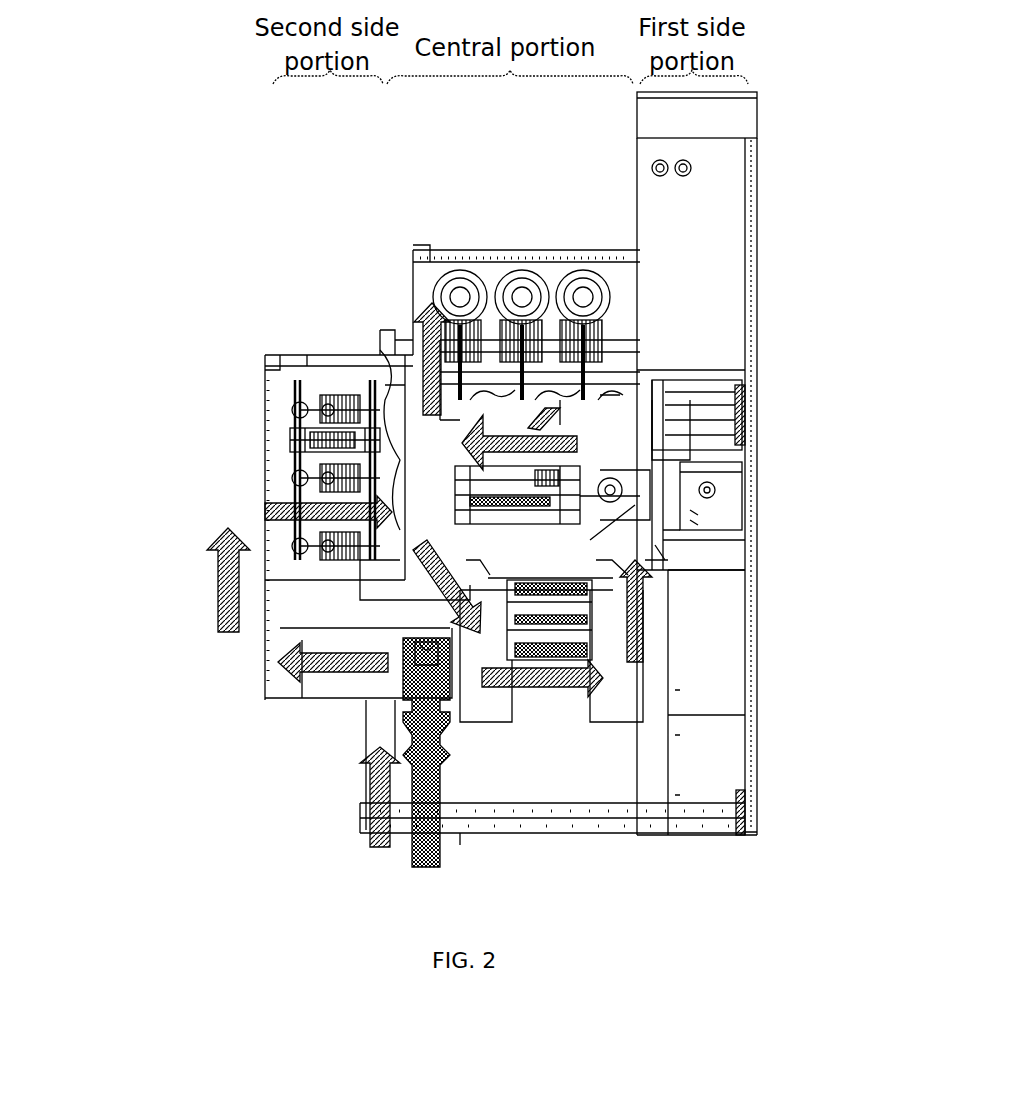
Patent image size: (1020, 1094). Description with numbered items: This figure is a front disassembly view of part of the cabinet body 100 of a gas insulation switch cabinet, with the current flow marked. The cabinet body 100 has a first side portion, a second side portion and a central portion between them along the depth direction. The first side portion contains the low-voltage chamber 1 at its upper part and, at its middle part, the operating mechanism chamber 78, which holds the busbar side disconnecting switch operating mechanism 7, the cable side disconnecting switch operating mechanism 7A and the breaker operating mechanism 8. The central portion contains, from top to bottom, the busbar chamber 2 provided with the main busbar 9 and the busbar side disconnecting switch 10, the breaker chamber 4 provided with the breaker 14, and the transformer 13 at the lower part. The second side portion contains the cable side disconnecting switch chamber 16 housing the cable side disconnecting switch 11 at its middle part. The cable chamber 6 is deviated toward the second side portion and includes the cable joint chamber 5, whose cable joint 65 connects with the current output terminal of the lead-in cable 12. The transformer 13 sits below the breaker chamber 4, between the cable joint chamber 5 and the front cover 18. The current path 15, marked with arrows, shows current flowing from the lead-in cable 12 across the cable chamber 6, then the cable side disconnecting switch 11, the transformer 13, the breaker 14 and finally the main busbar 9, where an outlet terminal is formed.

The cabinet body 100 is at (211, 174).
The low-voltage chamber 1 is at (695, 258).
The busbar chamber 2 is at (553, 276).
The main busbar 9 is at (505, 282).
The busbar side disconnecting switch 10 is at (432, 305).
The breaker chamber 4 is at (602, 417).
The busbar side disconnecting switch operating mechanism 7 is at (693, 380).
The cable side disconnecting switch operating mechanism 7A is at (742, 420).
The breaker operating mechanism 8 is at (705, 533).
The operating mechanism chamber 78 is at (715, 557).
The breaker 14 is at (560, 492).
The front cover 18 is at (748, 655).
The transformer 13 is at (588, 660).
The lead-in cable 12 is at (437, 773).
The cable chamber 6 is at (475, 755).
The cable side disconnecting switch chamber 16 is at (285, 385).
The cable side disconnecting switch 11 is at (315, 445).
The cable joint chamber 5 is at (265, 672).
The cable joint 65 is at (405, 672).
The current path 15 is at (363, 822).